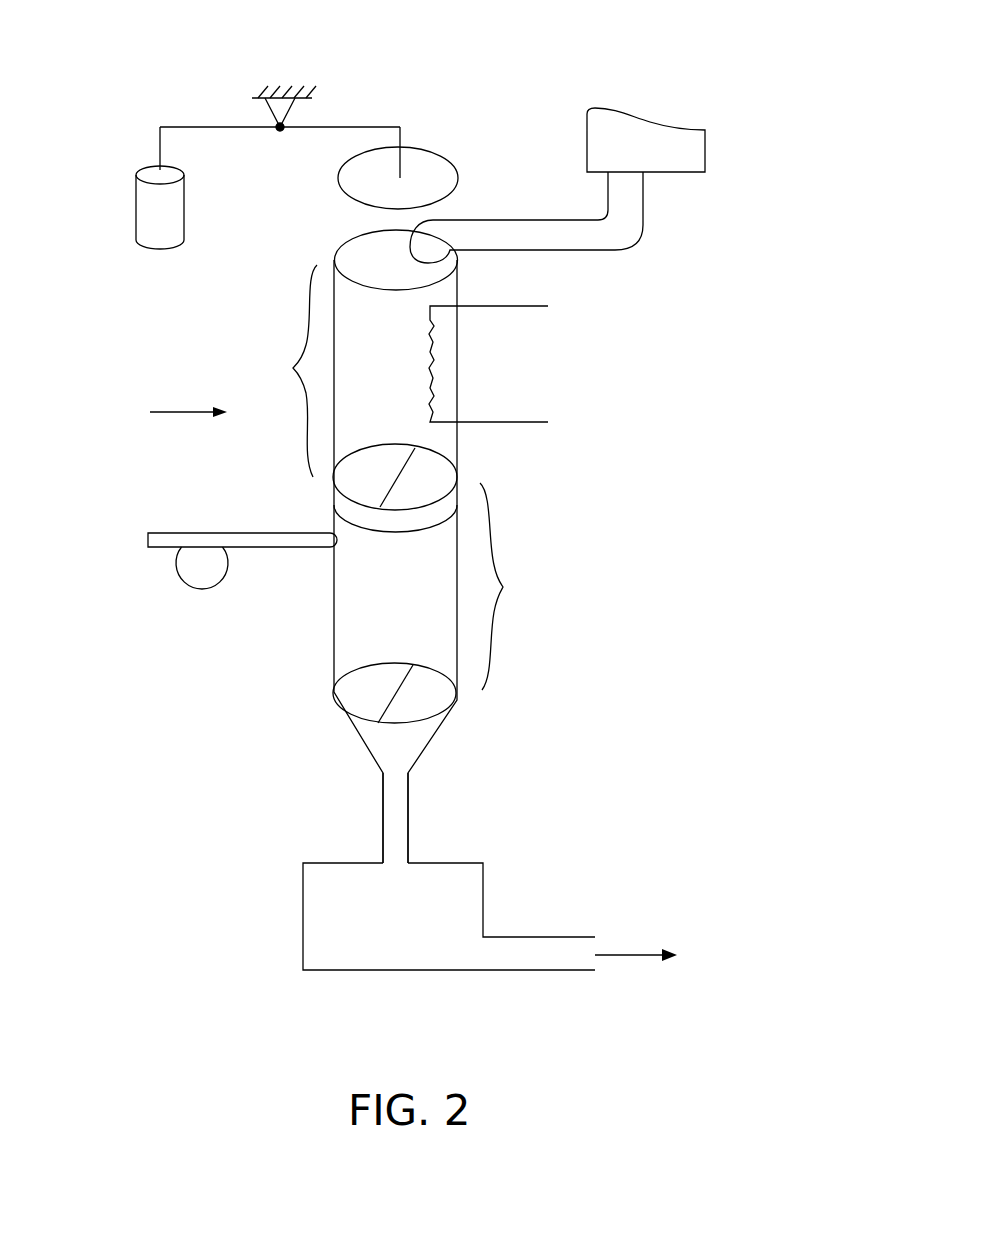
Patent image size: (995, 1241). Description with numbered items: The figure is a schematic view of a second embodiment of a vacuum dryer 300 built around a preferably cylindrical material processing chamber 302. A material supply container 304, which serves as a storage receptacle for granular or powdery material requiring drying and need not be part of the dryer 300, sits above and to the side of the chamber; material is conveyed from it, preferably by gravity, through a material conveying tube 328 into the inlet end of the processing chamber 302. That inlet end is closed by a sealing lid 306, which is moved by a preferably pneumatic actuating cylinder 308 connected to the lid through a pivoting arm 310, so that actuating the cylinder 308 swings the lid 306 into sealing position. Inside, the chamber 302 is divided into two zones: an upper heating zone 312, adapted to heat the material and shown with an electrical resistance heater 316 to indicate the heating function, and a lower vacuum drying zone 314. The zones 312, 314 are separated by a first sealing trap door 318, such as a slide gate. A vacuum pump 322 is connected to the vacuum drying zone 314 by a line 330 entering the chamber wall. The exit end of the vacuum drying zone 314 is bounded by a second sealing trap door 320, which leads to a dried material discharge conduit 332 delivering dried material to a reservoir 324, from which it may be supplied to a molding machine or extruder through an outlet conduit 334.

The vacuum dryer 300 is at (155, 413).
The material processing chamber 302 is at (328, 452).
The material supply container 304 is at (693, 155).
The sealing lid 306 is at (472, 152).
The pneumatic actuating cylinder 308 is at (150, 225).
The pivoting arm 310 is at (208, 127).
The heating zone 312 is at (278, 371).
The vacuum drying zone 314 is at (522, 586).
The electrical resistance heater 316 is at (507, 422).
The first sealing trap door 318 is at (440, 477).
The second sealing trap door 320 is at (433, 698).
The vacuum pump 322 is at (192, 575).
The reservoir 324 is at (455, 893).
The material conveying tube 328 is at (608, 235).
The inlet conduit 330 is at (292, 540).
The dried material discharge conduit 332 is at (398, 810).
The outlet conduit 334 is at (533, 953).